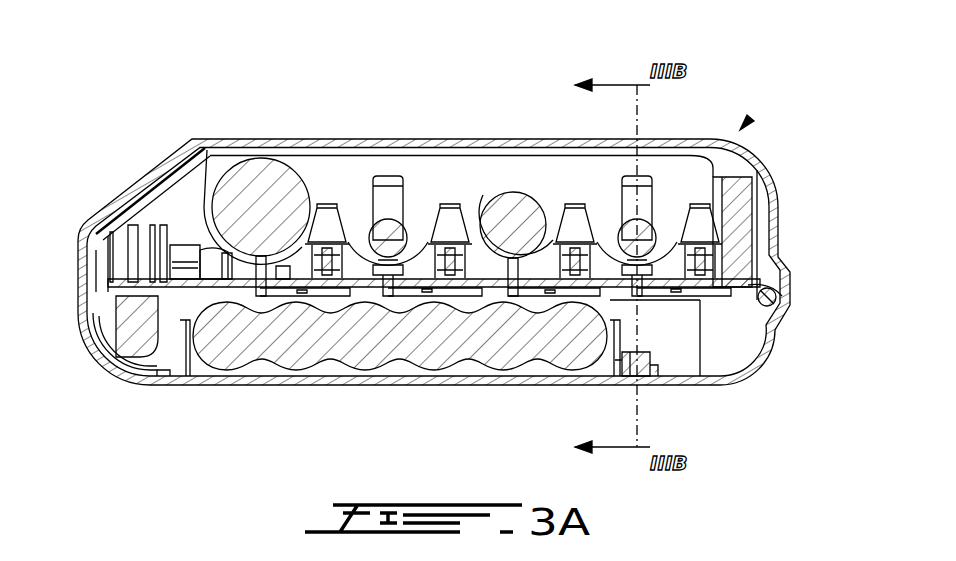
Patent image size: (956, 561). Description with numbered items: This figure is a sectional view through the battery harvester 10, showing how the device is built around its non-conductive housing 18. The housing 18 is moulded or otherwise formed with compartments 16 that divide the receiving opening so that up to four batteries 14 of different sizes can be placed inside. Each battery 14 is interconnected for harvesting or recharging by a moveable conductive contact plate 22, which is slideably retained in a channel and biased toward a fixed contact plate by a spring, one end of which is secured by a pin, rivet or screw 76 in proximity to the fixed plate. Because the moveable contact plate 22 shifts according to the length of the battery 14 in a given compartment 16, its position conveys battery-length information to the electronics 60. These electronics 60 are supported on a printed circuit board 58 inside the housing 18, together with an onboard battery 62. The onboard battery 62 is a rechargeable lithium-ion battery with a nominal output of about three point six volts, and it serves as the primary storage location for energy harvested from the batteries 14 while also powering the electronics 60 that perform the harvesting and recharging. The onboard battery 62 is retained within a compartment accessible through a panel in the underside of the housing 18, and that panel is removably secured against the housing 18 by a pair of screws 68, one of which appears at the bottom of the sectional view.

The battery harvester 10 is at (741, 128).
The batteries 14 is at (388, 220).
The compartments 16 is at (600, 200).
The housing 18 is at (728, 375).
The moveable conductive contact plate 22 is at (647, 176).
The printed circuit board 58 is at (142, 290).
The electronics 60 is at (187, 262).
The onboard battery 62 is at (273, 345).
The screws 68 is at (637, 380).
The pin, rivet or screw 76 is at (650, 268).